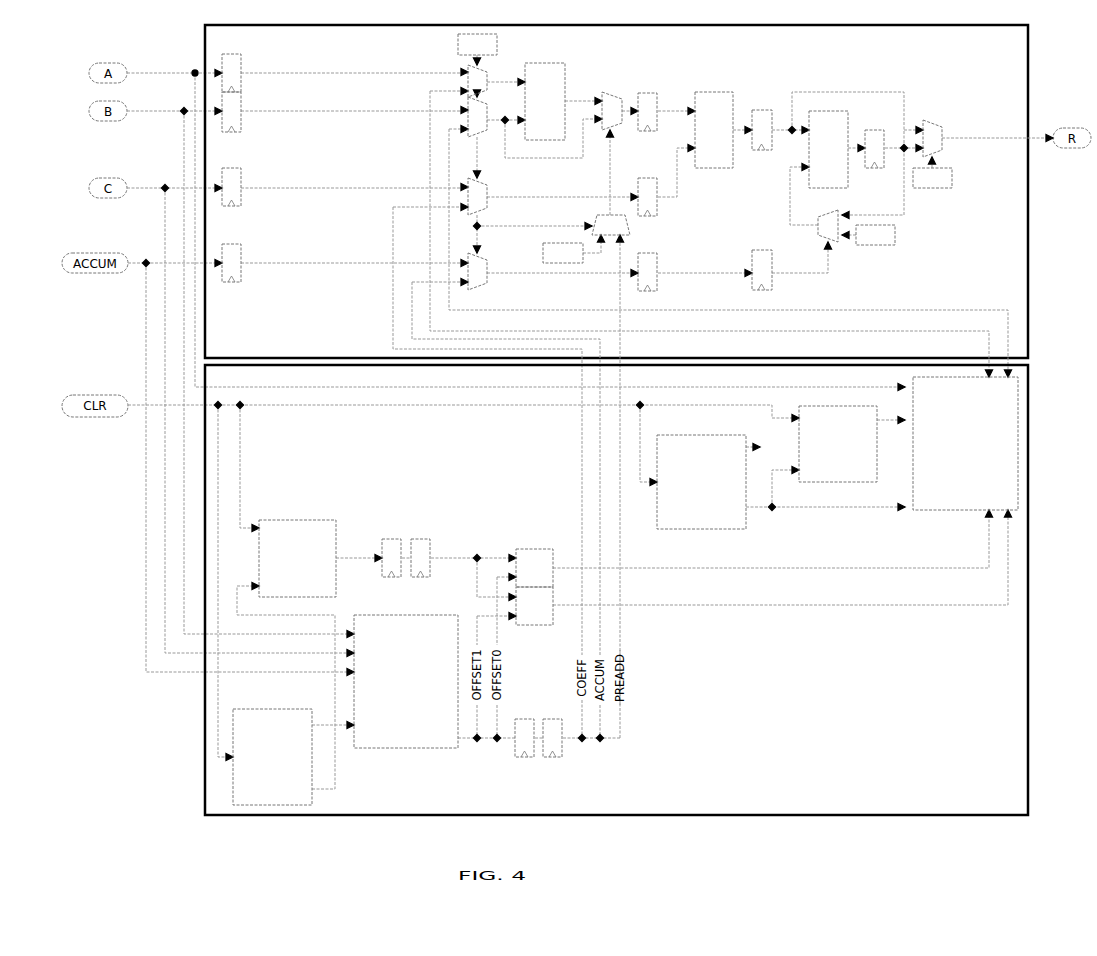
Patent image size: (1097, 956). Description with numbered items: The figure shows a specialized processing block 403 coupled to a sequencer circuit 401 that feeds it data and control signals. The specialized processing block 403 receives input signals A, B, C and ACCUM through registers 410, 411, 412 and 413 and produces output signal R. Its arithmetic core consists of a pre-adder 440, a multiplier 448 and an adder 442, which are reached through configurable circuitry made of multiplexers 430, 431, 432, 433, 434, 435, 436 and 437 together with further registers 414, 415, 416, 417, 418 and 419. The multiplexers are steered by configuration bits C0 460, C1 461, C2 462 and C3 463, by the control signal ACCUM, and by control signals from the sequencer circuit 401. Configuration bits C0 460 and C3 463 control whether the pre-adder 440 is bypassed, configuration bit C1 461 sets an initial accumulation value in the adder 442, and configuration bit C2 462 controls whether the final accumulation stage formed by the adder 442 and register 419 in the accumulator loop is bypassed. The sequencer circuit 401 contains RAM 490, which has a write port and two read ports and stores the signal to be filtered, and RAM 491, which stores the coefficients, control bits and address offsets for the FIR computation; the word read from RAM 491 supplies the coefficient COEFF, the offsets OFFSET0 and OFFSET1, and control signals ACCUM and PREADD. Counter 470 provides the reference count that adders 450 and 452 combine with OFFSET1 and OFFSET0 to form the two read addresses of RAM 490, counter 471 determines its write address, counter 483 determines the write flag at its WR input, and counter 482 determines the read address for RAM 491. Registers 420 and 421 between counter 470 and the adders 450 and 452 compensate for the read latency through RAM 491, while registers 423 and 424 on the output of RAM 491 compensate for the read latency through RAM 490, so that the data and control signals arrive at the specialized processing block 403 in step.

The sequencer circuit 401 is at (616, 590).
The specialized processing block 403 is at (616, 191).
The register 410 is at (241, 63).
The register 411 is at (241, 101).
The register 412 is at (241, 176).
The register 413 is at (241, 251).
The register 414 is at (646, 93).
The register 415 is at (646, 178).
The register 416 is at (646, 253).
The register 417 is at (760, 110).
The register 418 is at (760, 250).
The register 419 is at (874, 130).
The register 420 is at (389, 539).
The register 421 is at (420, 539).
The register 423 is at (521, 719).
The register 424 is at (552, 719).
The multiplexer 430 is at (503, 65).
The multiplexer 431 is at (503, 105).
The multiplexer 432 is at (503, 183).
The multiplexer 433 is at (487, 268).
The multiplexer 434 is at (598, 218).
The multiplexer 435 is at (609, 92).
The multiplexer 436 is at (935, 127).
The multiplexer 437 is at (838, 214).
The pre-adder 440 is at (545, 101).
The adder 442 is at (828, 149).
The multiplier 448 is at (714, 130).
The adder 450 is at (532, 549).
The adder 452 is at (535, 626).
The configuration bit C0 460 is at (543, 250).
The configuration bit C1 461 is at (895, 238).
The configuration bit C2 462 is at (952, 181).
The configuration bit C3 463 is at (497, 48).
The counter 470 is at (297, 558).
The counter 471 is at (838, 444).
The counter 482 is at (272, 757).
The counter 483 is at (701, 482).
The RAM 490 is at (965, 443).
The RAM 491 is at (406, 681).